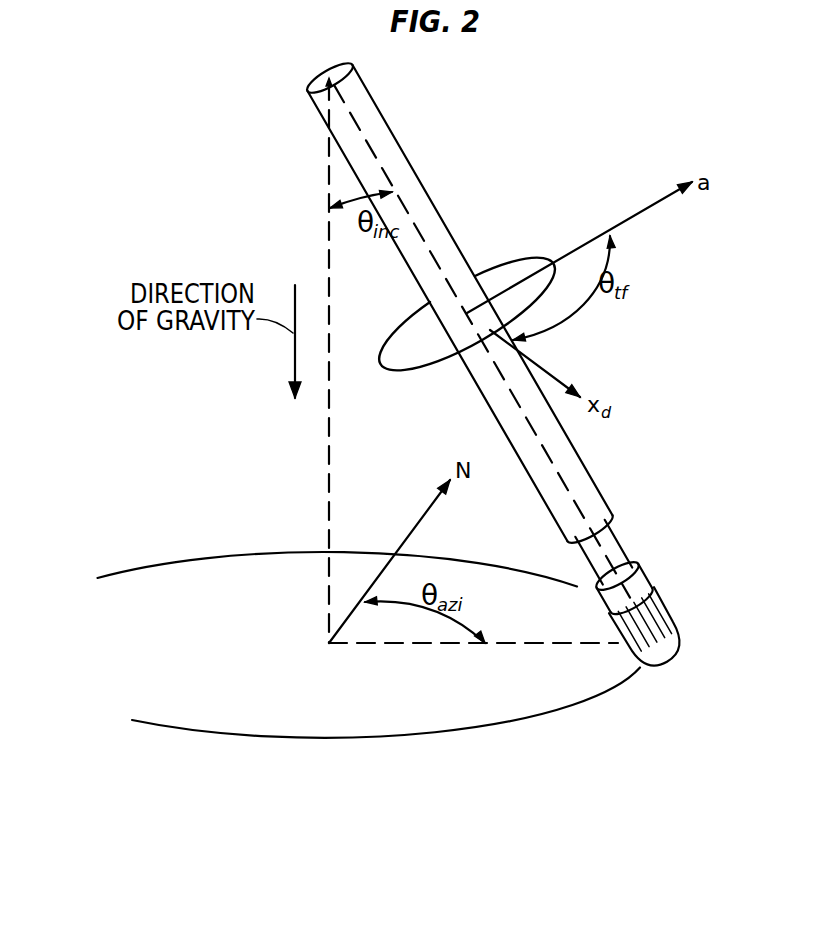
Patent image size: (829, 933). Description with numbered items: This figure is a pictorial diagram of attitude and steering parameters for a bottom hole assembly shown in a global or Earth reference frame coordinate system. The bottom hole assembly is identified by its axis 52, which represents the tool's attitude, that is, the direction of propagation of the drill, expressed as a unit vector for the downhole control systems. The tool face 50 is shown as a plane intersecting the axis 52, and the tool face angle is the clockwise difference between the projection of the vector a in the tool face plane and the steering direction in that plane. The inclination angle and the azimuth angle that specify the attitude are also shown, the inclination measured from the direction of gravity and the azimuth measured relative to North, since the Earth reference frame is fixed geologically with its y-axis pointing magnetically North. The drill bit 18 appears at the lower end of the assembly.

The axis of BHA 52 is at (368, 141).
The tool face 50 is at (523, 259).
The drill bit 18 is at (667, 587).